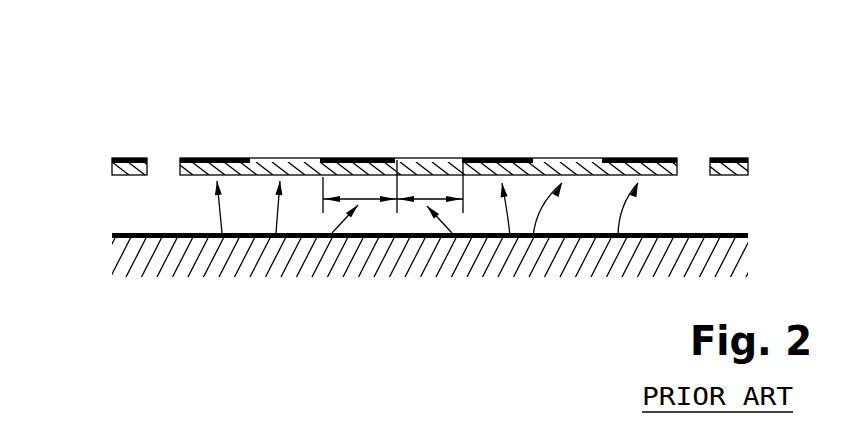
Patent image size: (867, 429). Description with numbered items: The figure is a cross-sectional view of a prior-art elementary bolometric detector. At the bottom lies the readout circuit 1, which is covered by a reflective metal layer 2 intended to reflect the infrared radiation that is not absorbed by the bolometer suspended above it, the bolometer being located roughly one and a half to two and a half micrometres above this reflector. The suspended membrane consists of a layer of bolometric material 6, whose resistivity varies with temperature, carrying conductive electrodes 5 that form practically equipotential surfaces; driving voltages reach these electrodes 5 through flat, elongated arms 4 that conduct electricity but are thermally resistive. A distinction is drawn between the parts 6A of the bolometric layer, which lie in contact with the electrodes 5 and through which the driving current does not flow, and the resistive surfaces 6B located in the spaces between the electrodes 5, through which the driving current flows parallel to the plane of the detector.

The readout circuit 1 is at (158, 254).
The reflective metal layer 2 is at (144, 232).
The arm 4 is at (732, 158).
The electrode 5 is at (642, 158).
The bolometric material 6 is at (438, 158).
The parts of the bolometric layer not carrying driving current 6A is at (222, 236).
The resistive surfaces of the bolometric layer 6B is at (278, 236).